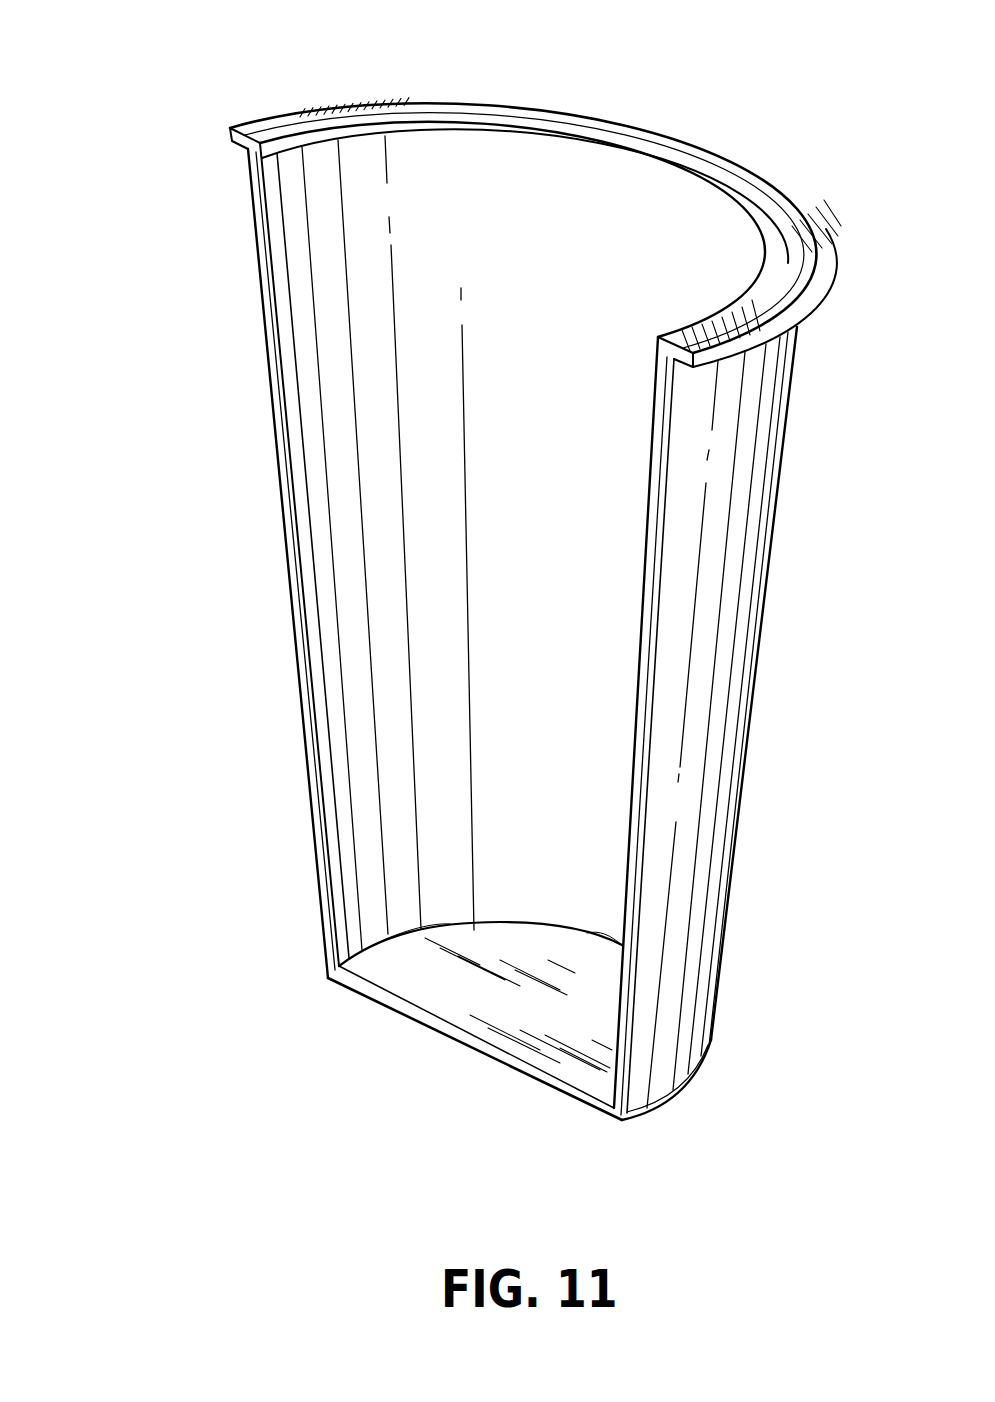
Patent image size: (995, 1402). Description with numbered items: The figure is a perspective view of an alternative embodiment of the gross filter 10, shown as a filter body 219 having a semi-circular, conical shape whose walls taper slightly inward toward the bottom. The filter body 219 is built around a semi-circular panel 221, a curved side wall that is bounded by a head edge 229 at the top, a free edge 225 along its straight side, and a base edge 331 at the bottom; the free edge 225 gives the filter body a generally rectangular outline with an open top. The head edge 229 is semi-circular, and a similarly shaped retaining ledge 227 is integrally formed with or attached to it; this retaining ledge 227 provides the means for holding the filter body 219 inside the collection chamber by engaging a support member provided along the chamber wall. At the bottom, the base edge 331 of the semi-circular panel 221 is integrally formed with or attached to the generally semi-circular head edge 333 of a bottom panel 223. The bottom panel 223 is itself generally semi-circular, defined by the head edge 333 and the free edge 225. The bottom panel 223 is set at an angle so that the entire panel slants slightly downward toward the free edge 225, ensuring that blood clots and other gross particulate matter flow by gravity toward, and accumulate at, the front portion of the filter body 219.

The container assembly 10 is at (93, 141).
The filter body 219 is at (172, 503).
The semi-circular panel 221 is at (450, 533).
The bottom panel 223 is at (503, 1024).
The free edge 225 is at (368, 992).
The retaining ledge 227 is at (260, 127).
The head edge 229 is at (367, 140).
The base edge 331 is at (450, 930).
The head edge 333 is at (587, 933).